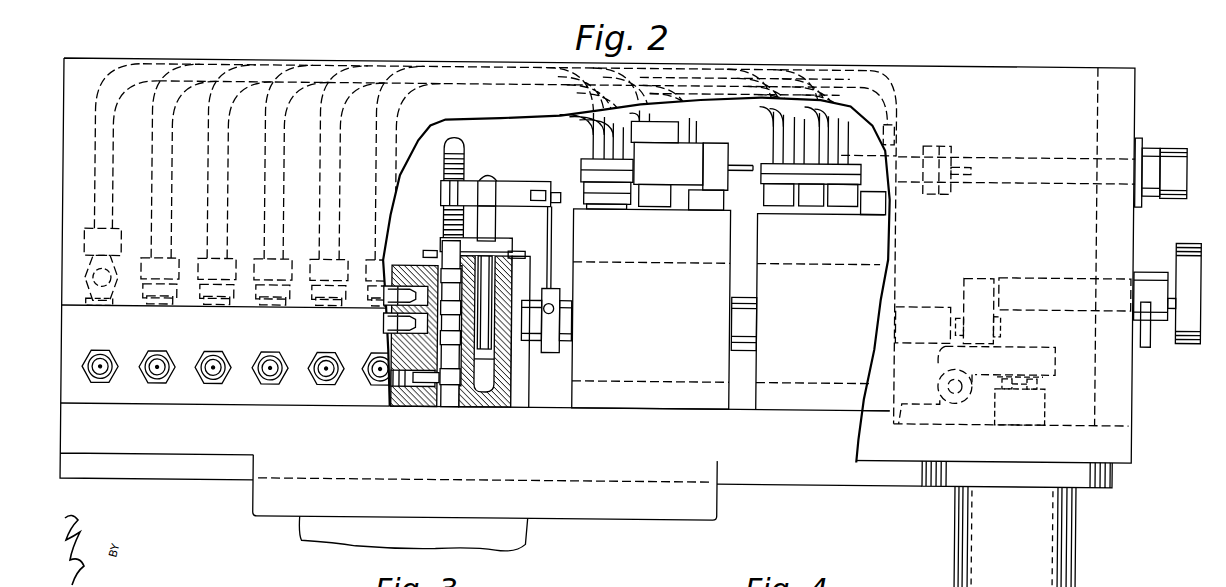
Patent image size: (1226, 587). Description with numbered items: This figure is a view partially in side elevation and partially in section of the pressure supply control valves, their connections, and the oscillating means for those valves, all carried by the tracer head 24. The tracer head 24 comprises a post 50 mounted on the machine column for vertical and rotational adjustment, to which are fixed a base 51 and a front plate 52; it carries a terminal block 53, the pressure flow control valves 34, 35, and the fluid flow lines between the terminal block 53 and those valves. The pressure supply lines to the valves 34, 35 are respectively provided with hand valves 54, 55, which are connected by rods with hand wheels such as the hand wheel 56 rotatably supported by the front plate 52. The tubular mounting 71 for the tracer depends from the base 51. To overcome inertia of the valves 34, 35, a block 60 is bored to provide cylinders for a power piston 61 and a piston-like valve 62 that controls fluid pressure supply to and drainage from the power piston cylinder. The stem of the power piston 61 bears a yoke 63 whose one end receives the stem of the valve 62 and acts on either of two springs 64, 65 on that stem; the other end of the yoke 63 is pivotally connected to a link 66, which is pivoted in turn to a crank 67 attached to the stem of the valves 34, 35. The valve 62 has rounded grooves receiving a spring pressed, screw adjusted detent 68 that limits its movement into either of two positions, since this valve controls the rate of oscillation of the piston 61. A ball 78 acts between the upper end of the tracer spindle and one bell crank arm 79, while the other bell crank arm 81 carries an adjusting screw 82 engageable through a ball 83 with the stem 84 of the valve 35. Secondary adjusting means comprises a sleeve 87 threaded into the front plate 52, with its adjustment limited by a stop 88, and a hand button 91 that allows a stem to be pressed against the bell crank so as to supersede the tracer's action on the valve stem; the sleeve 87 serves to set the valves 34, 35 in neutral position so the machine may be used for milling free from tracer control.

The tracer head 24 is at (1000, 78).
The pressure flow control valve 34 is at (654, 377).
The pressure flow control valve 35 is at (817, 380).
The post 50 is at (514, 541).
The base 51 is at (856, 470).
The front plate 52 is at (1123, 395).
The terminal block 53 is at (148, 392).
The hand valve 54 is at (679, 149).
The hand valve 55 is at (900, 143).
The hand wheel 56 is at (1174, 173).
The block 60 is at (408, 263).
The power piston 61 is at (508, 355).
The piston-like valve 62 is at (449, 390).
The yoke 63 is at (511, 186).
The spring 64 is at (445, 220).
The spring 65 is at (447, 157).
The link 66 is at (549, 231).
The crank 67 is at (566, 324).
The detent 68 is at (428, 380).
The tubular mounting 71 is at (976, 570).
The ball 78 is at (1048, 383).
The bell crank arm 79 is at (1052, 347).
The bell crank arm 81 is at (982, 280).
The adjusting screw 82 is at (1003, 318).
The ball 83 is at (958, 320).
The stem 84 is at (924, 301).
The sleeve 87 is at (1046, 290).
The stop 88 is at (1154, 322).
The hand button 91 is at (1196, 238).